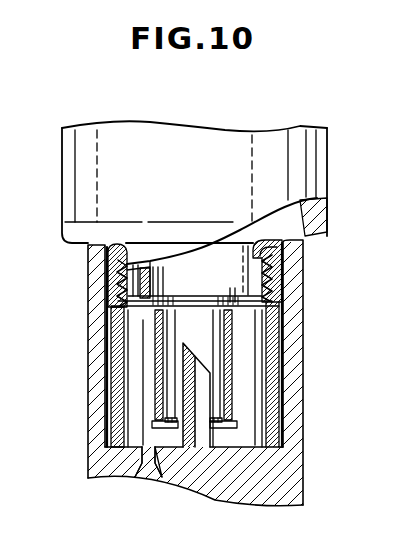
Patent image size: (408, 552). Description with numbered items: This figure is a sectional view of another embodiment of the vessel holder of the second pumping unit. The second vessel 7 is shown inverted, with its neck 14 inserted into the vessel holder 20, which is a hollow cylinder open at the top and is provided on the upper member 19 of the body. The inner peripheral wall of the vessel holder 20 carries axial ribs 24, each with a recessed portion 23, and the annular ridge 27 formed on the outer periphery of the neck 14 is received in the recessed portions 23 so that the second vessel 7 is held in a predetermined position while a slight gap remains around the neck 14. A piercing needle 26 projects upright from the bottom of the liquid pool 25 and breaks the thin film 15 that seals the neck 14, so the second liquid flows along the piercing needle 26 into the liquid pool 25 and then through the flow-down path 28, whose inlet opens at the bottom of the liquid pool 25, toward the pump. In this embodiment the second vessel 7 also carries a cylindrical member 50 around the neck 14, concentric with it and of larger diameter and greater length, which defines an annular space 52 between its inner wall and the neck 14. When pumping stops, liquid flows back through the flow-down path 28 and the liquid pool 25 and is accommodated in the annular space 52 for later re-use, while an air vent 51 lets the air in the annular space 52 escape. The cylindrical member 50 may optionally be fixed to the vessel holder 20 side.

The second vessel 7 is at (317, 168).
The neck 14 is at (233, 375).
The thin film 15 is at (225, 430).
The upper member 19 is at (93, 460).
The vessel holder 20 is at (95, 306).
The recessed portion 23 is at (108, 280).
The axial ribs 24 is at (280, 333).
The liquid pool 25 is at (223, 440).
The piercing needle 26 is at (204, 368).
The annular ridge 27 is at (107, 318).
The flow-down path 28 is at (140, 458).
The cylindrical member 50 is at (270, 413).
The air vent 51 is at (277, 310).
The annular space 52 is at (135, 365).